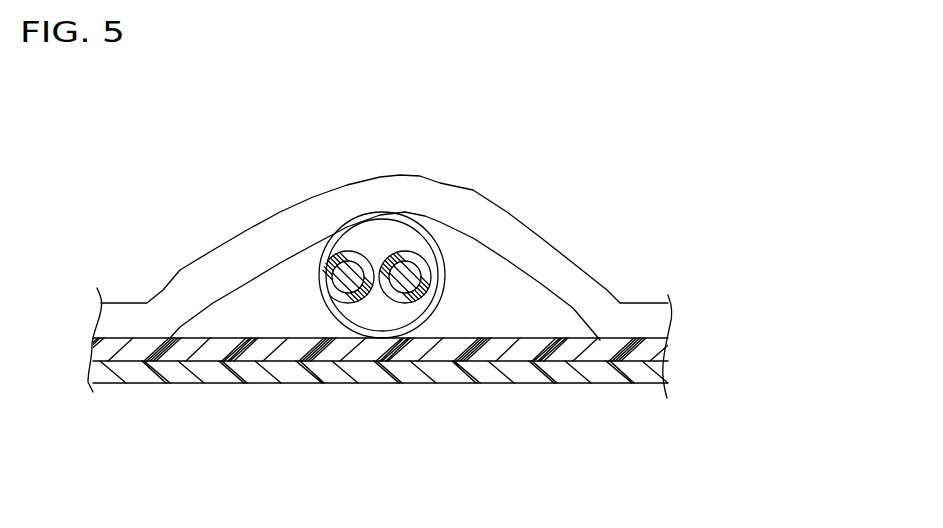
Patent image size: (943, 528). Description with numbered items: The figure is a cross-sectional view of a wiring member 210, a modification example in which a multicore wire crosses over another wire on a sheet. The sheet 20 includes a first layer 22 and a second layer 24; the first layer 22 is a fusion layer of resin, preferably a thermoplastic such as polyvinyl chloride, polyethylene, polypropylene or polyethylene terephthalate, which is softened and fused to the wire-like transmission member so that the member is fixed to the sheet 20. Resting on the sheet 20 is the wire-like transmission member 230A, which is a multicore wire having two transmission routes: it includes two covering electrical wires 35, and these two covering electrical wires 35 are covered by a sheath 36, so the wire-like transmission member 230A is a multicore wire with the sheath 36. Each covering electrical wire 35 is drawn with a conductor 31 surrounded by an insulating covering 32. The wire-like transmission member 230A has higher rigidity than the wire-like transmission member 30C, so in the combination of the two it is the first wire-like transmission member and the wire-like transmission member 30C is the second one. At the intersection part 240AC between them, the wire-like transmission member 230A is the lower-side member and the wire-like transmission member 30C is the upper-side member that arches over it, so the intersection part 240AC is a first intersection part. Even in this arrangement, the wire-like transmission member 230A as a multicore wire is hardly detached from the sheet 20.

The wiring member 210 is at (160, 129).
The intersection part 240AC is at (393, 210).
The wire-like transmission member 30C is at (498, 222).
The sheet 20 is at (728, 333).
The first layer 22 is at (657, 350).
The second layer 24 is at (652, 377).
The wire-like transmission member 230A is at (448, 476).
The sheath 36 is at (333, 308).
The covering electrical wire 35 is at (385, 443).
The core wire 31 is at (403, 295).
The insulating coating 32 is at (423, 293).